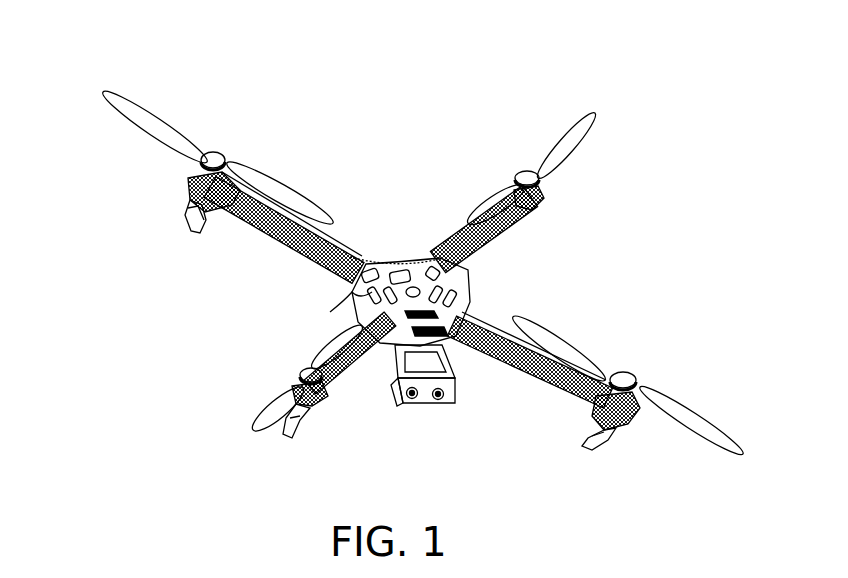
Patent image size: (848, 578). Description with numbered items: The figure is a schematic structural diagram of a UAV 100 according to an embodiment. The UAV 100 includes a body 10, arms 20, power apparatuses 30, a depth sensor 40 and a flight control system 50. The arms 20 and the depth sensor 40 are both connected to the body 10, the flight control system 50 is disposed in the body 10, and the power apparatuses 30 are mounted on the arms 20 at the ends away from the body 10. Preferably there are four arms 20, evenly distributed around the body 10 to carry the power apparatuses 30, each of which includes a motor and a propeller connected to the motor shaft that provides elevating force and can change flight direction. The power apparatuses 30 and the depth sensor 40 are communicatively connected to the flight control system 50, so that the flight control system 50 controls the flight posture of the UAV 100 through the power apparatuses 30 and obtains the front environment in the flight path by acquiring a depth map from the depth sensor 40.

The UAV 100 is at (58, 37).
The body 10 is at (350, 304).
The arms 20 is at (478, 252).
The power apparatuses 30 is at (540, 197).
The depth sensor 40 is at (425, 396).
The flight control system 50 is at (440, 302).